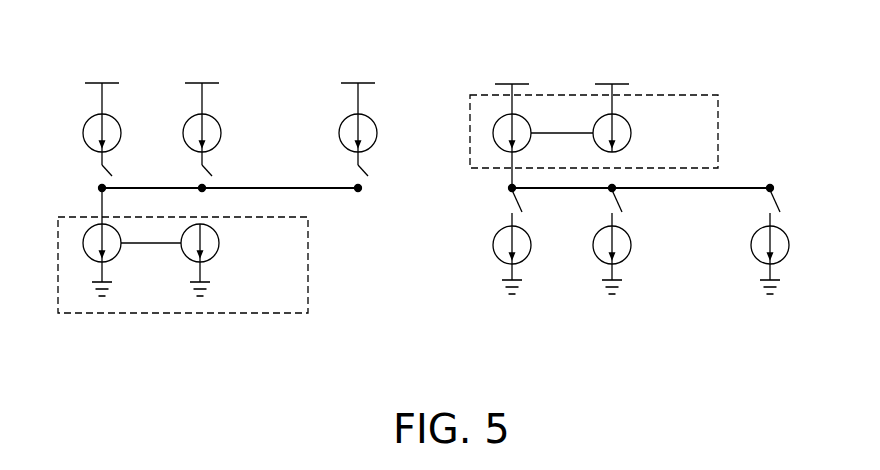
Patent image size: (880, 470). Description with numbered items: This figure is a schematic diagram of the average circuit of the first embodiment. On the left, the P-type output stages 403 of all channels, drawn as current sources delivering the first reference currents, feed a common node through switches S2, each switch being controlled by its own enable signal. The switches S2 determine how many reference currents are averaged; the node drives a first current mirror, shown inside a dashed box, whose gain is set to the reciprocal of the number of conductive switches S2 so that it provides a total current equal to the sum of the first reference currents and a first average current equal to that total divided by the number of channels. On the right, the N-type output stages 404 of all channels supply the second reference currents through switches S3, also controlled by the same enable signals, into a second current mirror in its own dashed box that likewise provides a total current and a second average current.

The P-type output stage 403 is at (83, 125).
The switches S2 is at (100, 170).
The switches S3 is at (507, 198).
The N-type output stage 404 is at (497, 262).